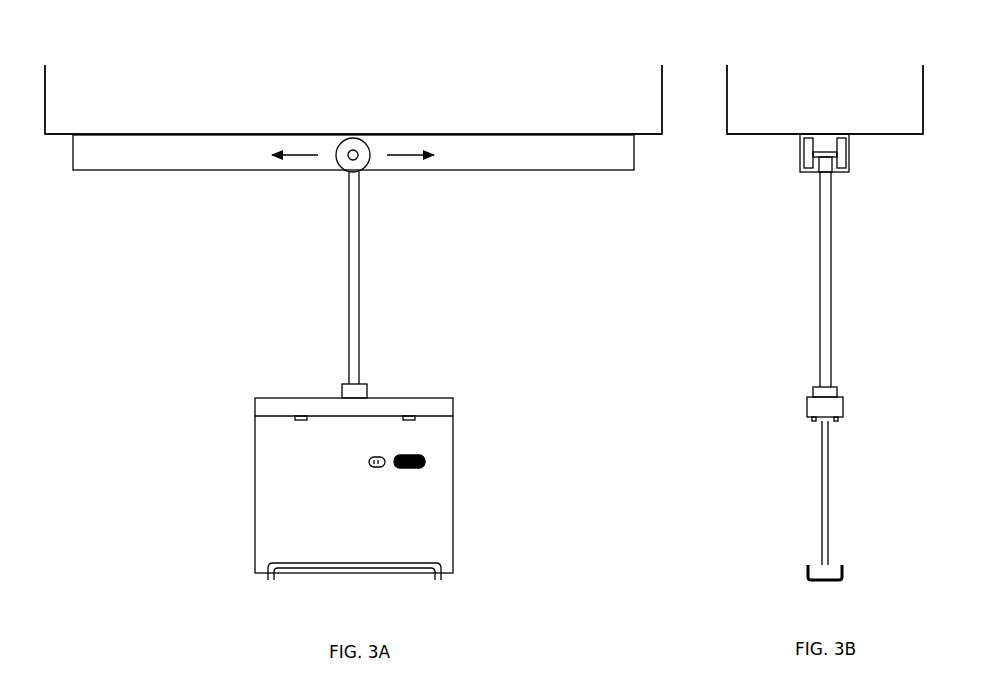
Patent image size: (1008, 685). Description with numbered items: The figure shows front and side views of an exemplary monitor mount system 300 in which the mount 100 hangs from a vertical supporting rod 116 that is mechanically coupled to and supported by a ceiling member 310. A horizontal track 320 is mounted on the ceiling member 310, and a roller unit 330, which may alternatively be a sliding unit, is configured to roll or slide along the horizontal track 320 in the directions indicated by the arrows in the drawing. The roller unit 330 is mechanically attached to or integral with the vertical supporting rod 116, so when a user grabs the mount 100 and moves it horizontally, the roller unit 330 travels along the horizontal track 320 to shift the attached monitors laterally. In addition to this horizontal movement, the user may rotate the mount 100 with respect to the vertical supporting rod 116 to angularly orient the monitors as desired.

In FIG. 3A, the mount 100 is at (289, 395).
In FIG. 3B, the mount 100 is at (812, 385).
In FIG. 3A, the vertical supporting rod 116 is at (361, 294).
In FIG. 3B, the vertical supporting rod 116 is at (832, 268).
In FIG. 3A, the monitor mount system 300 is at (346, 46).
In FIG. 3B, the monitor mount system 300 is at (817, 46).
In FIG. 3A, the ceiling member 310 is at (222, 117).
In FIG. 3B, the ceiling member 310 is at (842, 117).
In FIG. 3A, the horizontal track 320 is at (71, 155).
In FIG. 3B, the horizontal track 320 is at (798, 155).
In FIG. 3A, the roller unit 330 is at (358, 135).
In FIG. 3B, the roller unit 330 is at (851, 157).